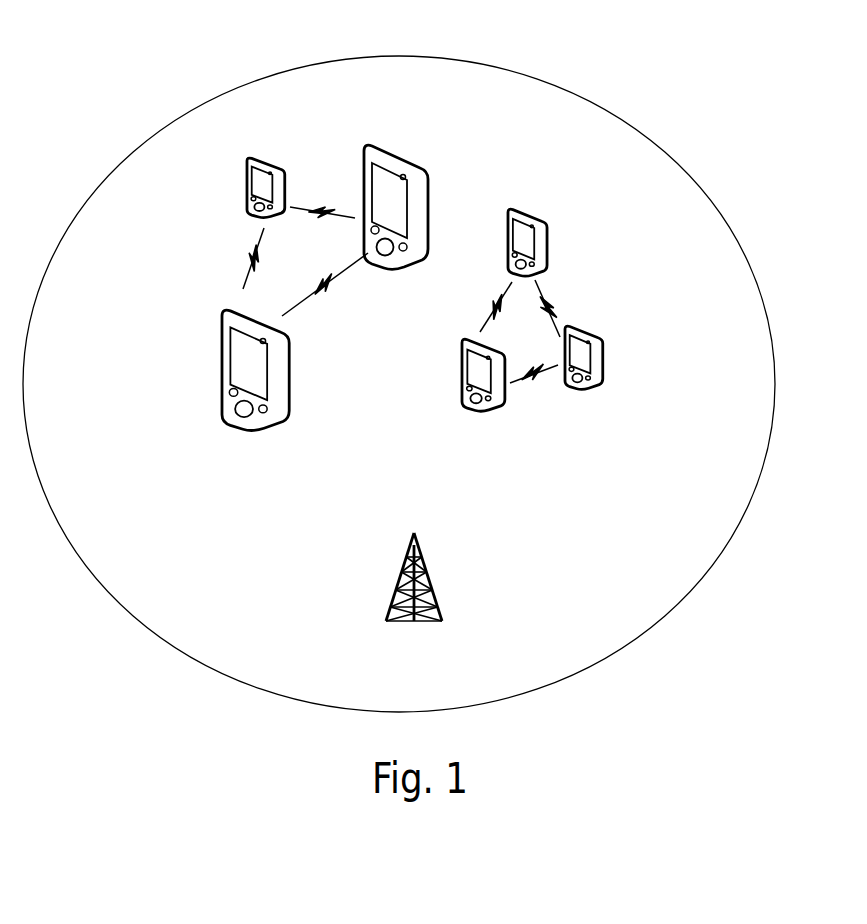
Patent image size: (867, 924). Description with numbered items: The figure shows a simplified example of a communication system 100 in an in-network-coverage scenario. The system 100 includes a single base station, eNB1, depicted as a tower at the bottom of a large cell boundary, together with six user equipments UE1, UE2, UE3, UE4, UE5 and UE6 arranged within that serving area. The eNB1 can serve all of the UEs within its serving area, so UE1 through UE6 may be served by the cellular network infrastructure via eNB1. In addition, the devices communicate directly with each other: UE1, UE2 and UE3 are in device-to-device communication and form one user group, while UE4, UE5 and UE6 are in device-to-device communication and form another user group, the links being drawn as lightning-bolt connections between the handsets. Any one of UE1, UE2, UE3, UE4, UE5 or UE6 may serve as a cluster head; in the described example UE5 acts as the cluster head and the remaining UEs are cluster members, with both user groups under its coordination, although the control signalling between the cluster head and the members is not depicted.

The communication system 100 is at (192, 107).
The user equipment UE1 is at (396, 195).
The user equipment UE2 is at (264, 175).
The user equipment UE3 is at (255, 386).
The user equipment UE4 is at (527, 231).
The user equipment UE5 is at (480, 390).
The user equipment UE6 is at (585, 370).
The eNB eNB1 is at (413, 590).